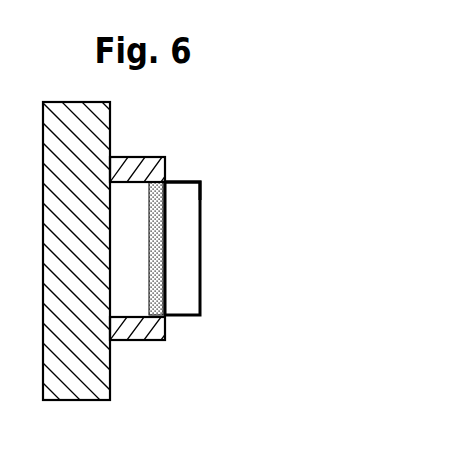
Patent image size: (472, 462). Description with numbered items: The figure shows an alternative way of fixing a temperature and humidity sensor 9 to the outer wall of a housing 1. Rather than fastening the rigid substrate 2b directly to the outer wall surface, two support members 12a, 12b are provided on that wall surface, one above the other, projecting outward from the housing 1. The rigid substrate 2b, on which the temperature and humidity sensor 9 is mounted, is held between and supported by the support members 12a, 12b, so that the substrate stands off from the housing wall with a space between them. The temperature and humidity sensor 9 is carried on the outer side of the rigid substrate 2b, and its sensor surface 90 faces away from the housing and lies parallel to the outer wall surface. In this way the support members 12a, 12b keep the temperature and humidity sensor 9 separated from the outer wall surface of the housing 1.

The housing 1 is at (110, 383).
The support member 12a is at (143, 157).
The support member 12b is at (143, 342).
The rigid substrate 2b is at (167, 300).
The temperature and humidity sensor 9 is at (202, 247).
The sensor surface 90 is at (202, 195).